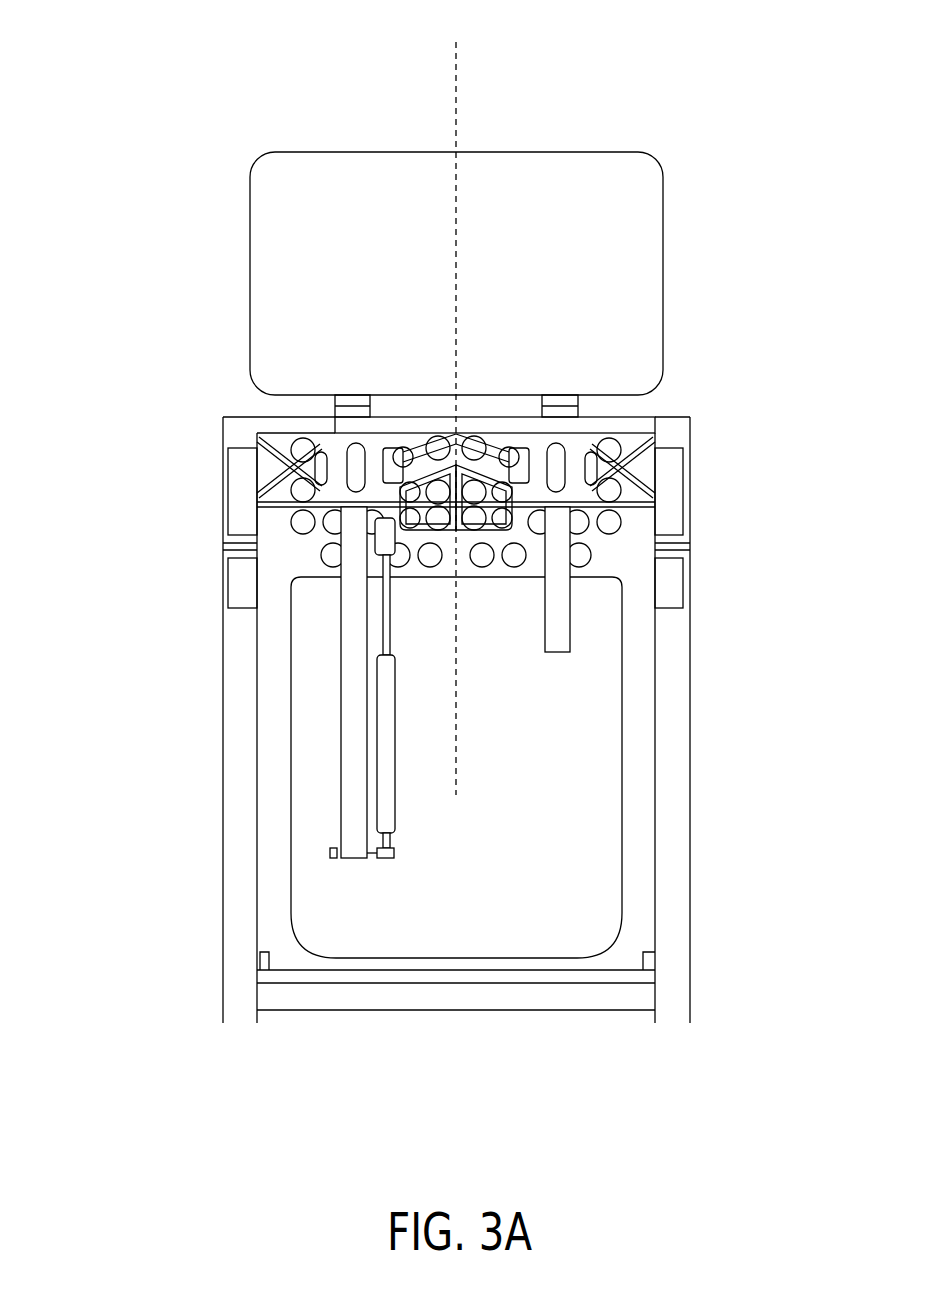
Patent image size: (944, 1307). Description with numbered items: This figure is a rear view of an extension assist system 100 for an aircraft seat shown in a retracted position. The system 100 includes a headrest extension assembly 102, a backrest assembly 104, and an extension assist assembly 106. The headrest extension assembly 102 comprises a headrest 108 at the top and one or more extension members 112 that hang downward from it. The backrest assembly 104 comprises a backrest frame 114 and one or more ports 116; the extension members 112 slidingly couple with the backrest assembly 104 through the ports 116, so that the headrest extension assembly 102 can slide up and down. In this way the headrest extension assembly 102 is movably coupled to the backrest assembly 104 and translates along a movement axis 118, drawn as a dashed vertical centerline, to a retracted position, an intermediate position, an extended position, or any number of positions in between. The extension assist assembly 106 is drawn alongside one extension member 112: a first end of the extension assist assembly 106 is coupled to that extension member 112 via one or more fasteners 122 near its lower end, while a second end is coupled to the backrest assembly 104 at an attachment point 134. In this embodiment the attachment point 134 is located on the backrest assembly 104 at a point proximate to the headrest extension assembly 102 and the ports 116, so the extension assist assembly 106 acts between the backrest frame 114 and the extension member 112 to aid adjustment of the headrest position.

The extension assist system 100 is at (172, 55).
The headrest extension assembly 102 is at (715, 262).
The backrest assembly 104 is at (740, 702).
The extension assist assembly 106 is at (377, 745).
The headrest 108 is at (250, 265).
The extension member 112 is at (354, 612).
The backrest frame 114 is at (673, 650).
The port 116 is at (333, 416).
The movement axis 118 is at (458, 95).
The fastener 122 is at (335, 852).
The attachment point 134 is at (385, 535).